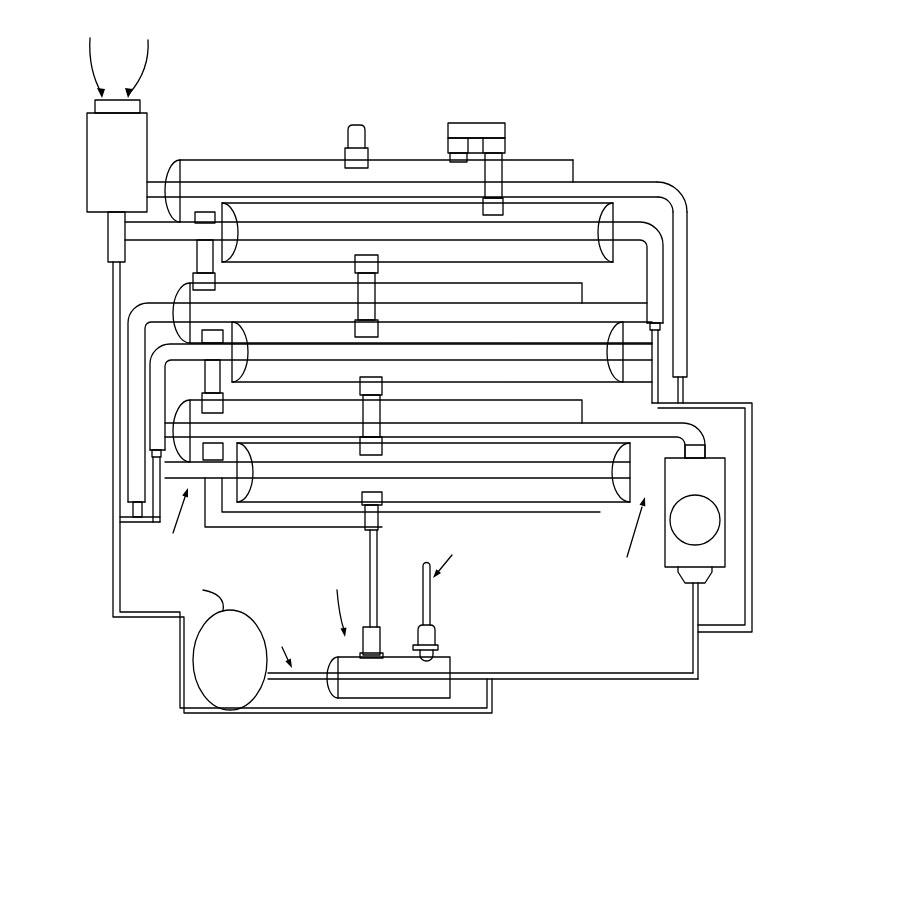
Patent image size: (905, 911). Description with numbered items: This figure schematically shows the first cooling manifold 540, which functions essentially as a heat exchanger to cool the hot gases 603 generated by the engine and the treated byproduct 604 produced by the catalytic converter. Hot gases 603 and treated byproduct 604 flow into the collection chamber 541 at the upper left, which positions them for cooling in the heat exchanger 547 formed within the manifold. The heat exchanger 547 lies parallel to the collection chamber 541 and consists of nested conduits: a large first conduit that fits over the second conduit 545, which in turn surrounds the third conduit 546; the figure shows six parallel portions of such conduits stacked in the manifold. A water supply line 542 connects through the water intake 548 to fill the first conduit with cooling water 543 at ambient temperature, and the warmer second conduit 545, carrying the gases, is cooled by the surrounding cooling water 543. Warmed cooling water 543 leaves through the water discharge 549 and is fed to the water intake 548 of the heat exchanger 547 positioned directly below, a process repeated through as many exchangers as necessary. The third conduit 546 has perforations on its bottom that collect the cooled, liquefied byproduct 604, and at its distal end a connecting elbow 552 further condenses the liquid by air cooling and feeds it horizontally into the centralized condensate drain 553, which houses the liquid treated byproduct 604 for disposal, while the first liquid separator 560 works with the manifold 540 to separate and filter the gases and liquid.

The first cooling manifold 540 is at (780, 90).
The collection chamber 541 is at (102, 150).
The water supply line 542 is at (352, 157).
The cooling water 543 is at (352, 138).
The second conduit 545 is at (543, 160).
The third conduit 546 is at (615, 187).
The heat exchanger 547 is at (80, 180).
The water intake 548 is at (342, 158).
The water discharge 549 is at (478, 122).
The connecting elbow 552 is at (677, 197).
The condensate drain 553 is at (440, 667).
The first liquid separator 560 is at (195, 683).
The hot gases 603 is at (89, 53).
The treated byproduct 604 is at (143, 53).